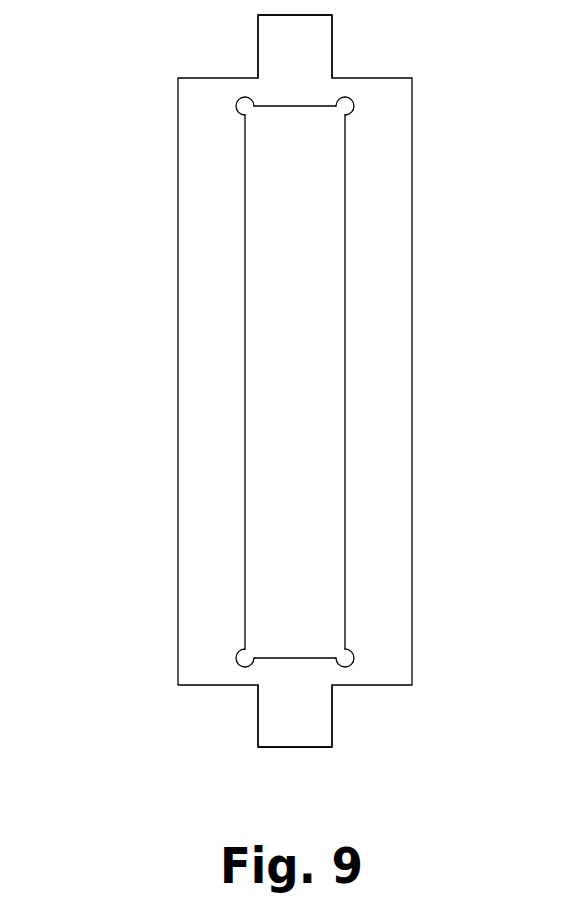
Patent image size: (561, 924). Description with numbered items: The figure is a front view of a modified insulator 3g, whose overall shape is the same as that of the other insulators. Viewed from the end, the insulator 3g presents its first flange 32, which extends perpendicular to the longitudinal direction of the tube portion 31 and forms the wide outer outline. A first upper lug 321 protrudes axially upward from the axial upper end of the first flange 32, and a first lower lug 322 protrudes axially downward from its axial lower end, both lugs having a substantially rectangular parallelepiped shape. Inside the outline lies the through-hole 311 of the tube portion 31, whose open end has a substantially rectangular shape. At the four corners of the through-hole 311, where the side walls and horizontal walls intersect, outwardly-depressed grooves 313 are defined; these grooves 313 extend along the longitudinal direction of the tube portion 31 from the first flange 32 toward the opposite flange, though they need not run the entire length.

The insulator 3g is at (150, 102).
The first flange 32 is at (202, 87).
The first upper lug 321 is at (332, 43).
The first lower lug 322 is at (302, 702).
The tube portion 31 is at (247, 255).
The through-hole 311 is at (260, 172).
The grooves 313 is at (241, 97).